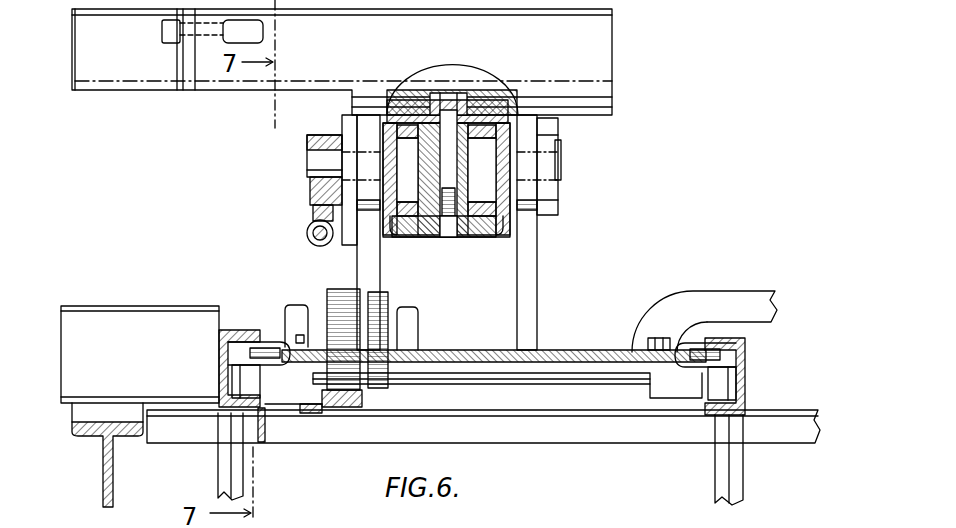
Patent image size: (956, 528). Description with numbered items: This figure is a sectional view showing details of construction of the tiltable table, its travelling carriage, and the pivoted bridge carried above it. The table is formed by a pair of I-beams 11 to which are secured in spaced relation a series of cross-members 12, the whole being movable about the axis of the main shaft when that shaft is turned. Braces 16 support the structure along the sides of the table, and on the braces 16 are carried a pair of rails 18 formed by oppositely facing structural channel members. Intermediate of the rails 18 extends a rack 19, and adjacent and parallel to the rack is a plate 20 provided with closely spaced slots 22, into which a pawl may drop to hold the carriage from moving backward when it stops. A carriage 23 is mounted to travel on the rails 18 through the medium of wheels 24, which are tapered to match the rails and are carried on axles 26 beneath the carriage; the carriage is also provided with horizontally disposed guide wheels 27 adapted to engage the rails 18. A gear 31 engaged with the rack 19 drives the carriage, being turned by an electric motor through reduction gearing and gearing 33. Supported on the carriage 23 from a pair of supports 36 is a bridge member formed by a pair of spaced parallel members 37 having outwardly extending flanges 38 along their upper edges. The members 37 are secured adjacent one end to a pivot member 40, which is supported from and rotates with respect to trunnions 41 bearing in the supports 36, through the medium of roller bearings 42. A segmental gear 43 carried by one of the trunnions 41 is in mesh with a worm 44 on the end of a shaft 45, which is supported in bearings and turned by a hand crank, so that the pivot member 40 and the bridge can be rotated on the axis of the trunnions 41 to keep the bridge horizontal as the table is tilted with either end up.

The I-beams 11 is at (112, 472).
The cross-members 12 is at (112, 306).
The braces 16 is at (218, 466).
The rails 18 is at (236, 330).
The rack 19 is at (362, 400).
The plate 20 is at (321, 413).
The slots 22 is at (300, 413).
The carriage 23 is at (561, 350).
The wheels 24 is at (242, 386).
The axles 26 is at (512, 383).
The guide wheels 27 is at (230, 352).
The gear 31 is at (330, 289).
The gearing 33 is at (388, 300).
The supports 36 is at (380, 265).
The spaced parallel members 37 is at (604, 61).
The outwardly extending flanges 38 is at (340, 15).
The pivot member 40 is at (482, 100).
The trunnions 41 is at (308, 152).
The roller bearings 42 is at (490, 237).
The segmental gear 43 is at (310, 190).
The worm 44 is at (313, 214).
The shaft 45 is at (307, 233).